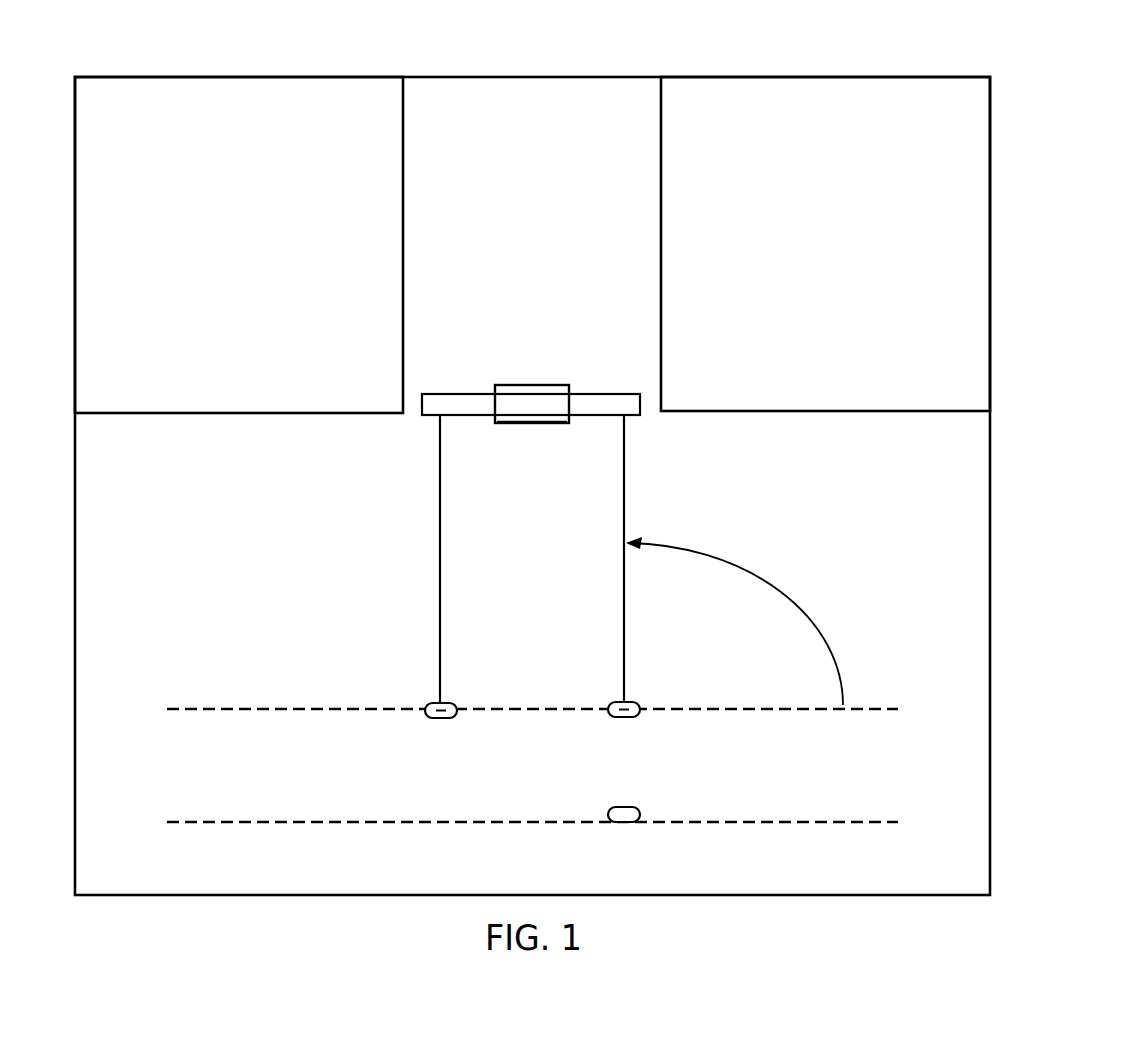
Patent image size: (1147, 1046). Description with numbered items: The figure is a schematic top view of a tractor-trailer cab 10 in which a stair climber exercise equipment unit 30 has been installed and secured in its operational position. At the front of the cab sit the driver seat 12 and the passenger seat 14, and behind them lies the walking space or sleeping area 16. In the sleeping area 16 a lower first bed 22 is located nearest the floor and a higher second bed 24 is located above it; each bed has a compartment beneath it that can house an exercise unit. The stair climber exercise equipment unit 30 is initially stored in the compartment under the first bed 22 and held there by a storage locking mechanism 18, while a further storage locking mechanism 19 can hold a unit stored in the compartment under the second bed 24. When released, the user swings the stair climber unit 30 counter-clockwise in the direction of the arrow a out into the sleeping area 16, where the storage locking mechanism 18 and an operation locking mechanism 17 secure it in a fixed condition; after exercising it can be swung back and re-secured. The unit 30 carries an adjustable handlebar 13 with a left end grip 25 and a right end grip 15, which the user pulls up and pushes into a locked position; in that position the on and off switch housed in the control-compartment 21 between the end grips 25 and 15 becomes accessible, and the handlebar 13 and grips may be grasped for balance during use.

The tractor-trailer cab 10 is at (1040, 68).
The driver seat 12 is at (244, 245).
The adjustable handlebar 13 is at (595, 395).
The passenger seat 14 is at (837, 241).
The right end grip 15 is at (629, 416).
The sleeping area 16 is at (299, 595).
The operation locking mechanism 17 is at (441, 718).
The storage locking mechanism 18 is at (624, 717).
The storage locking mechanism 19 is at (624, 822).
The control-compartment 21 is at (522, 423).
The first bed 22 is at (807, 708).
The second bed 24 is at (807, 822).
The left end grip 25 is at (433, 416).
The stair climber exercise equipment unit 30 is at (534, 356).
The arrow a is at (777, 597).